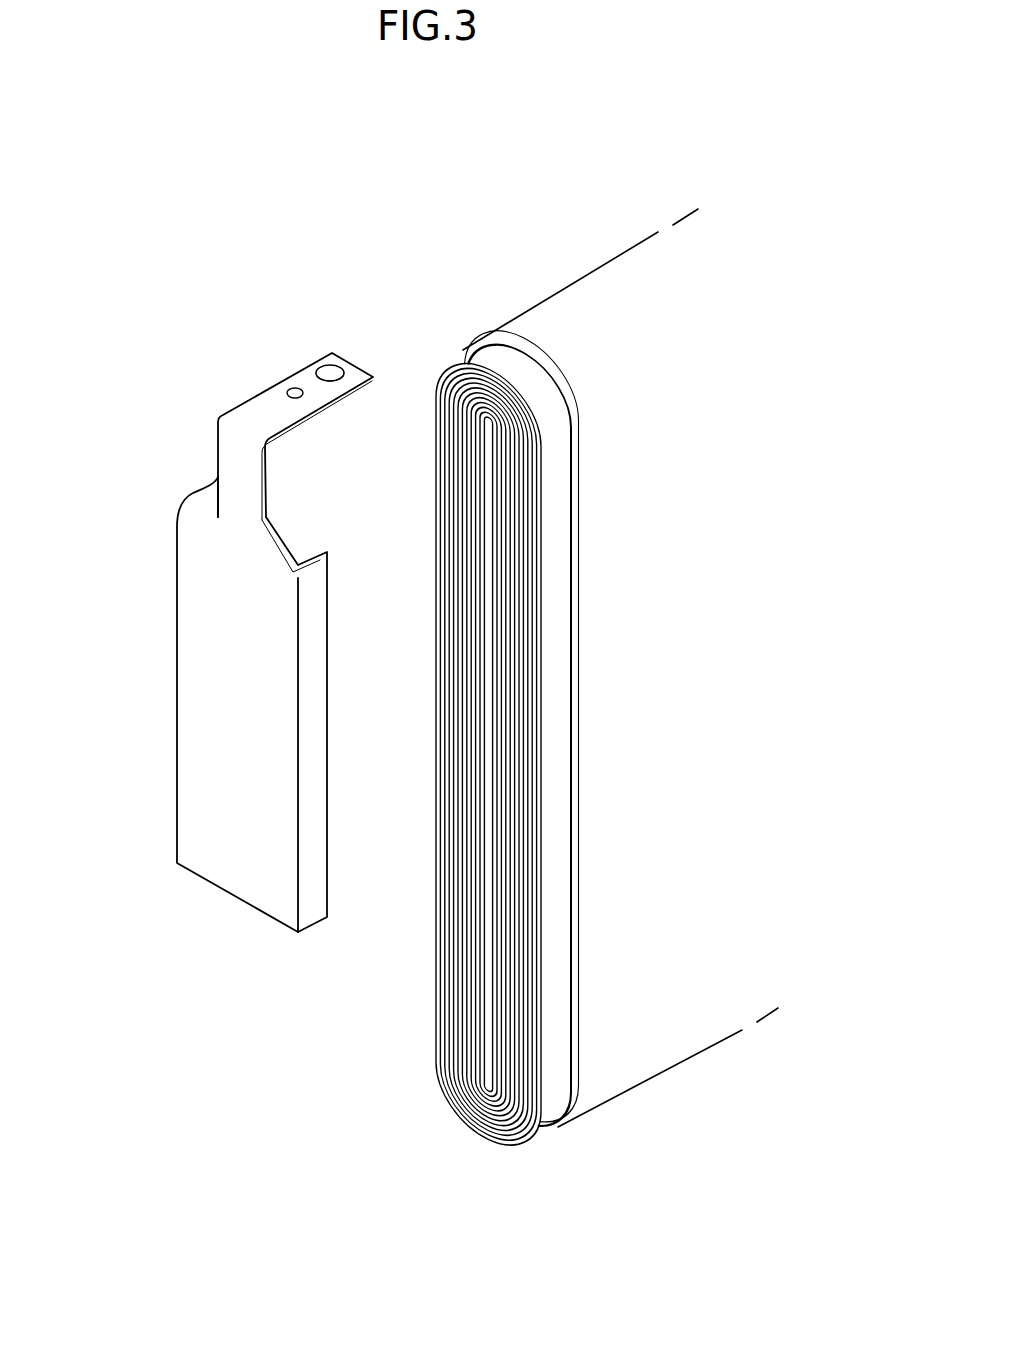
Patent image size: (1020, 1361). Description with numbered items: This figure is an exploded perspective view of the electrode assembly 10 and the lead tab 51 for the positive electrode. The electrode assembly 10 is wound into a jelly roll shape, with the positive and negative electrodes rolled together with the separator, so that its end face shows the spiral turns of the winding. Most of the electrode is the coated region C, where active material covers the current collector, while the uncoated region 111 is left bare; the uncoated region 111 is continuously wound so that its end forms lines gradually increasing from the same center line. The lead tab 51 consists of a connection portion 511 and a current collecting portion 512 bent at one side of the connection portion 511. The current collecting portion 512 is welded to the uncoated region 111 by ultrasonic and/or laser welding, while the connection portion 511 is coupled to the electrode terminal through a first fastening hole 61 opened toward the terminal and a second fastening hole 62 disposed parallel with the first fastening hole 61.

The electrode assembly 10 is at (590, 255).
The uncoated region 111 is at (552, 1132).
The lead tab 51 is at (170, 489).
The connection portion 511 is at (300, 368).
The current collecting portion 512 is at (190, 748).
The first fastening portion (hole) 61 is at (337, 368).
The second fastening portion (hole) 62 is at (287, 393).
The coated region C is at (656, 1049).